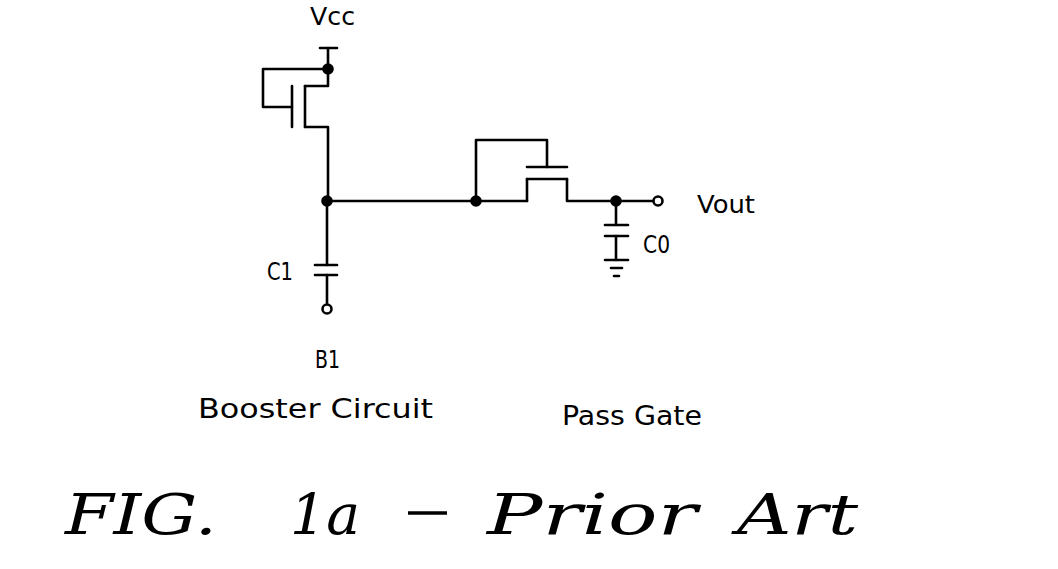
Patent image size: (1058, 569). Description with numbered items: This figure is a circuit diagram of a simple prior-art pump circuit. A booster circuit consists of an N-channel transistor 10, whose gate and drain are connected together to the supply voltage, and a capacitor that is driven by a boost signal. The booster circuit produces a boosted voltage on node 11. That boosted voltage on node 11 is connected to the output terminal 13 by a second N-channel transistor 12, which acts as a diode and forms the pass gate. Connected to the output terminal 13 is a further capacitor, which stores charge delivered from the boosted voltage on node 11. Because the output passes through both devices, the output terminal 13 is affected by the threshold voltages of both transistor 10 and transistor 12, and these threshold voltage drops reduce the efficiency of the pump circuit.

The N-channel transistor 10 is at (323, 126).
The node 11 is at (333, 198).
The N-channel transistor 12 is at (567, 188).
The Vout 13 is at (661, 195).